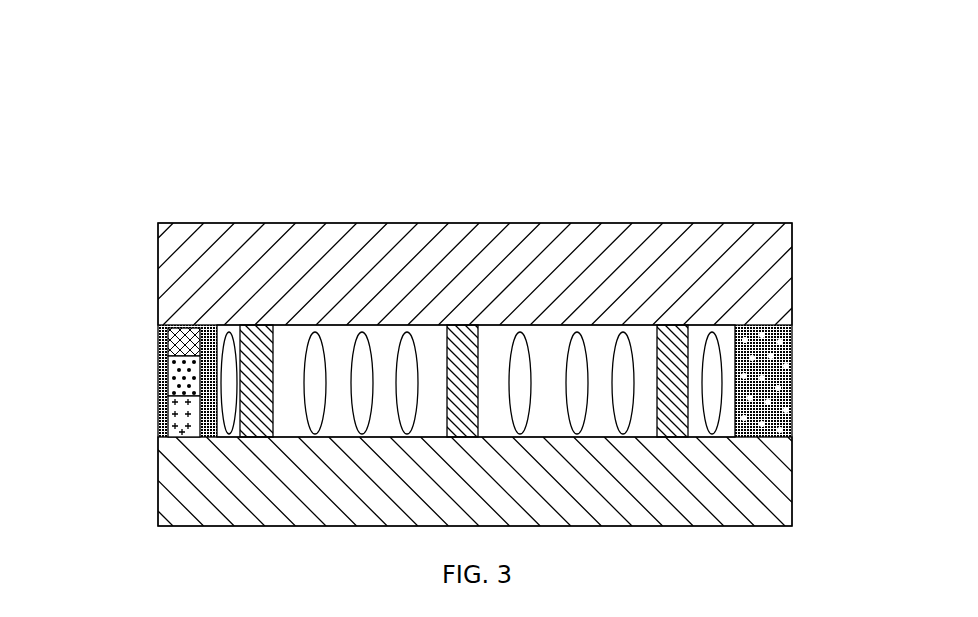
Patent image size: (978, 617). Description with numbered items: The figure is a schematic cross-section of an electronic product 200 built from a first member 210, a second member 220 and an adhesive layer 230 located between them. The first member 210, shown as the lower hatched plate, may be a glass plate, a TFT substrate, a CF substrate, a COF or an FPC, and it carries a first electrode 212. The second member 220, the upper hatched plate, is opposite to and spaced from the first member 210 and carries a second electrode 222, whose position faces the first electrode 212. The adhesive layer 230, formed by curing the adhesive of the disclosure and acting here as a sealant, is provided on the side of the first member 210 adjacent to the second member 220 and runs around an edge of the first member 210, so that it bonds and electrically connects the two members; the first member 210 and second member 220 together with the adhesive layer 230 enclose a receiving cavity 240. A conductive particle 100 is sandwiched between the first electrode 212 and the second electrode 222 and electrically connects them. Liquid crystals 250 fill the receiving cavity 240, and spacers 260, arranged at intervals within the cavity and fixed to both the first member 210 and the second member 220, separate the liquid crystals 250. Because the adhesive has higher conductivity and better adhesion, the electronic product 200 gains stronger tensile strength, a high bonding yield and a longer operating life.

The electronic product 200 is at (525, 61).
The second member 220 is at (757, 272).
The first member 210 is at (742, 495).
The adhesive layer 230 is at (773, 348).
The second electrode 222 is at (162, 345).
The conductive particle 100 is at (170, 380).
The first electrode 212 is at (178, 417).
The receiving cavity 240 is at (335, 348).
The spacer 260 is at (467, 355).
The liquid crystals 250 is at (622, 363).